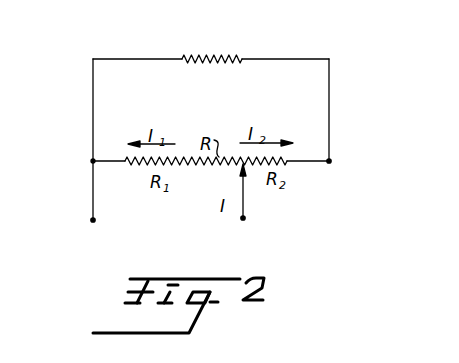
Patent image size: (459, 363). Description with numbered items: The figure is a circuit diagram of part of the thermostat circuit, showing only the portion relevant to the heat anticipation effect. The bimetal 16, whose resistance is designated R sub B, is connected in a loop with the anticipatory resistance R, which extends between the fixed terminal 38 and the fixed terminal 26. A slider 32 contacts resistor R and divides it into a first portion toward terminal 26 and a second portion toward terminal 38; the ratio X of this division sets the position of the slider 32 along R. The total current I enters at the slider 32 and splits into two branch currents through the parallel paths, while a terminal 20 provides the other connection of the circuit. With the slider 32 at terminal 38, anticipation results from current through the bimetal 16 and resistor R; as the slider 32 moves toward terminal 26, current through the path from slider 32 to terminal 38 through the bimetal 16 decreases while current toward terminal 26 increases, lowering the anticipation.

The bimetal element 16 is at (214, 57).
The terminal 20 is at (93, 221).
The terminal 26 is at (93, 161).
The slider 32 is at (243, 190).
The terminal 38 is at (329, 161).